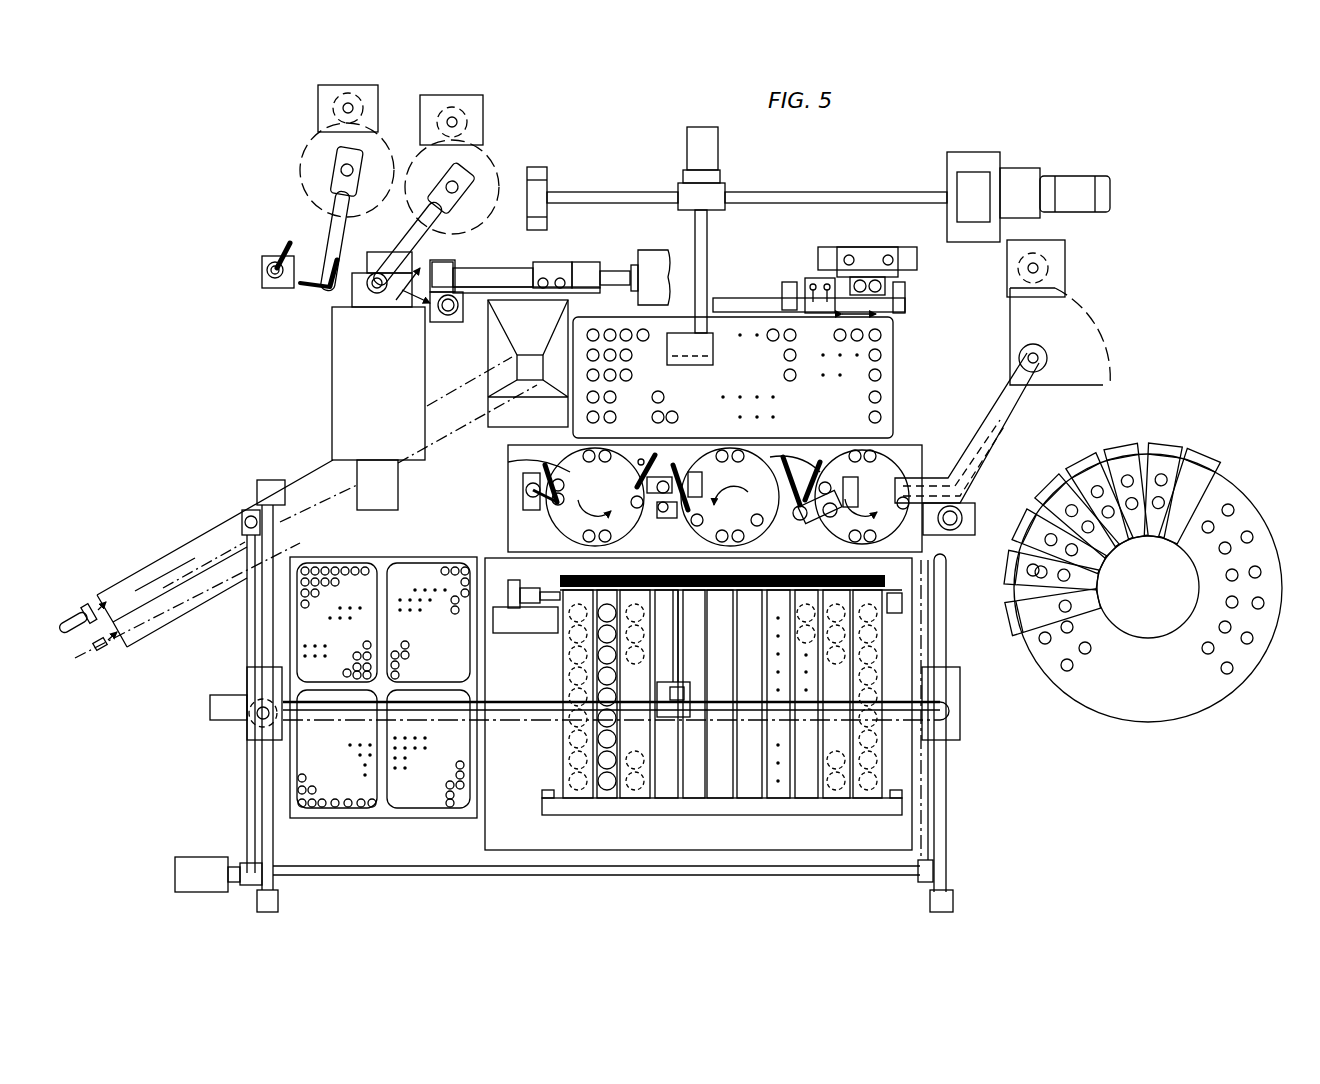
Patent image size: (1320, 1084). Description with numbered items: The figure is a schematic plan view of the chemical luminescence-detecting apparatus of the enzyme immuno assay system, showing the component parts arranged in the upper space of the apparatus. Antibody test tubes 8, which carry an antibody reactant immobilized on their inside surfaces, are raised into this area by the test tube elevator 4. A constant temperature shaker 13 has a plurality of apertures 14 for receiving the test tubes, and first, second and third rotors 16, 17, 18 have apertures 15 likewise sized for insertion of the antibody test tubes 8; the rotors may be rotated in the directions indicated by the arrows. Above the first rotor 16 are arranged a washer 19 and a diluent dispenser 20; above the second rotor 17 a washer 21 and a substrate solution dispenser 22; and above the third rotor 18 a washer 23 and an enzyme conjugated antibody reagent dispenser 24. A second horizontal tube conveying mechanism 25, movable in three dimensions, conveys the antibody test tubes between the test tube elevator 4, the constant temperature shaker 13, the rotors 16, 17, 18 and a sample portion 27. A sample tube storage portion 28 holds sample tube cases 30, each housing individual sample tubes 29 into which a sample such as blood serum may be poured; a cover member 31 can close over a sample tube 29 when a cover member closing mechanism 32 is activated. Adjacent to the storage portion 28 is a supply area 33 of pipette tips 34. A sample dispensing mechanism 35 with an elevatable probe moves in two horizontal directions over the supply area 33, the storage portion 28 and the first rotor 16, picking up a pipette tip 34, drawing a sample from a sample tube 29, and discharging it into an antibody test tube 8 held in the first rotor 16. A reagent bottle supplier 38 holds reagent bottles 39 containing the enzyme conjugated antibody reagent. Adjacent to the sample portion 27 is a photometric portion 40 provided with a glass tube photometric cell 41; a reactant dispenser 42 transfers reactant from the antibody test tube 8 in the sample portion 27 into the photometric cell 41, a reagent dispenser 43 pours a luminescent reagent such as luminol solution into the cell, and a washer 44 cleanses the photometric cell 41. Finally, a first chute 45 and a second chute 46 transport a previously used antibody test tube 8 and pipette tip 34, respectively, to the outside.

The test tube elevator 4 is at (872, 247).
The antibody test tube 8 is at (86, 611).
The constant temperature shaker 13 is at (878, 355).
The apertures 14 is at (880, 375).
The apertures 15 is at (558, 451).
The first rotor 16 is at (548, 513).
The second rotor 17 is at (680, 512).
The third rotor 18 is at (830, 520).
The washer 19 is at (523, 483).
The diluent dispenser 20 is at (645, 458).
The washer 21 is at (714, 450).
The substrate solution dispenser 22 is at (772, 452).
The washer 23 is at (796, 452).
The enzyme conjugated antibody reagent dispenser 24 is at (1005, 420).
The second horizontal tube conveying mechanism 25 is at (716, 328).
The sample portion 27 is at (593, 262).
The sample tube storage portion 28 is at (748, 825).
The sample tubes 29 is at (607, 790).
The sample tube case 30 is at (830, 800).
The cover member 31 is at (700, 798).
The cover member closing mechanism 32 is at (508, 585).
The supply area of pipette tips 33 is at (370, 822).
The pipette tip 34 is at (108, 644).
The sample dispensing mechanism 35 is at (668, 718).
The reagent bottle supplier 38 is at (1180, 438).
The reagent bottles 39 is at (1030, 574).
The photometric portion 40 is at (328, 360).
The photometric cell 41 is at (380, 290).
The reactant dispenser 42 is at (380, 270).
The reagent dispenser 43 is at (340, 283).
The washer 44 is at (281, 262).
The first chute 45 is at (512, 357).
The second chute 46 is at (188, 603).